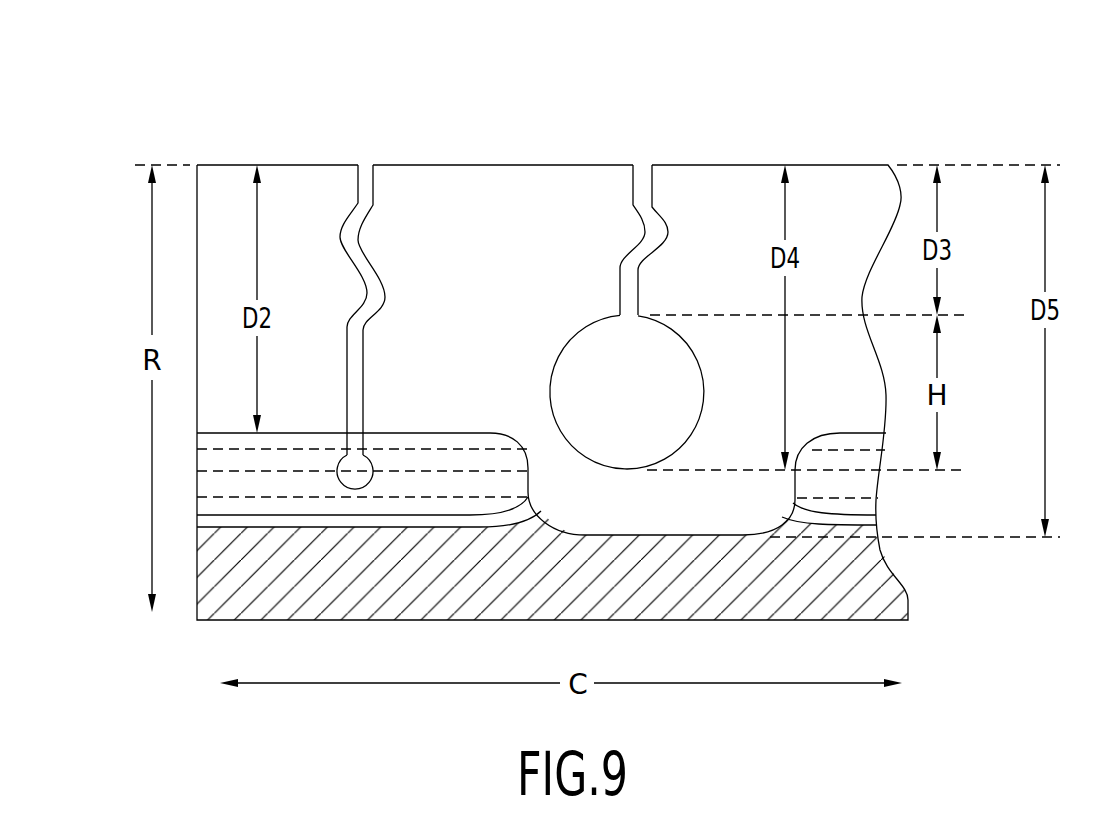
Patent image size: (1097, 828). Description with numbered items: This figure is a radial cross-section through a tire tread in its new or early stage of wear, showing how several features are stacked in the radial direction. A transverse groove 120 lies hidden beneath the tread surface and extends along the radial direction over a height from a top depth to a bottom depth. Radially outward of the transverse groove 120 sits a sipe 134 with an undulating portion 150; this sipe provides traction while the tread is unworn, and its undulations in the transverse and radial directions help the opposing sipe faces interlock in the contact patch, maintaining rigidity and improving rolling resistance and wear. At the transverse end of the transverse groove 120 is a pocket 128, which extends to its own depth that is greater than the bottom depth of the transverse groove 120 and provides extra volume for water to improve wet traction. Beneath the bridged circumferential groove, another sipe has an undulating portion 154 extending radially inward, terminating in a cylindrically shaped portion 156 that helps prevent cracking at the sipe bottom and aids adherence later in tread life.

The transverse groove 120 is at (655, 367).
The pocket 128 is at (662, 510).
The sipe 134 is at (640, 150).
The undulating portion 150 is at (677, 195).
The undulating portion 154 is at (426, 480).
The cylindrically shaped portion 156 is at (506, 480).